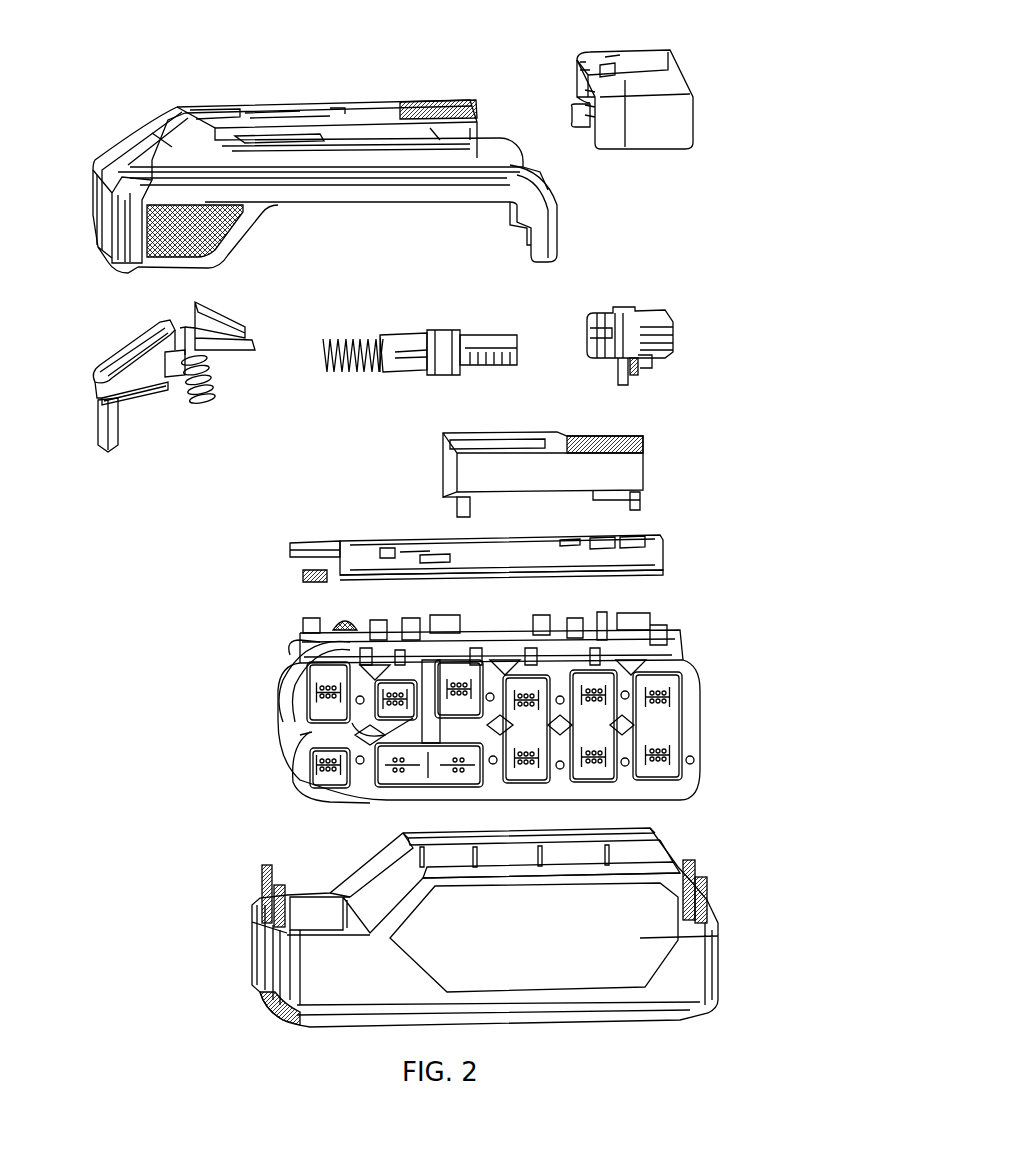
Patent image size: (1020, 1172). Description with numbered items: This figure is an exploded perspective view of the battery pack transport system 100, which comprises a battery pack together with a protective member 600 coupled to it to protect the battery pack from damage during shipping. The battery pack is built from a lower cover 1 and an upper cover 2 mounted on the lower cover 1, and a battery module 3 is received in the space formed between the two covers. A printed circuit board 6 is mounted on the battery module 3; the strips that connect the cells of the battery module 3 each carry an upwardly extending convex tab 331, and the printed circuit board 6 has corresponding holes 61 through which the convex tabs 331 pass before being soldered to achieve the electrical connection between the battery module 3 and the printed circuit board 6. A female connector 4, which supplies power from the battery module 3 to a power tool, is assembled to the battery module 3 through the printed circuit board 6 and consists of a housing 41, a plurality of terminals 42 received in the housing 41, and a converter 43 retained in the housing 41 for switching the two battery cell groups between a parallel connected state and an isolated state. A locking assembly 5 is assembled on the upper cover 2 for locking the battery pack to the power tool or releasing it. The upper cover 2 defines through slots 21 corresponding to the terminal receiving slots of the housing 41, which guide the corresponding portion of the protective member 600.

The battery pack transport system 100 is at (120, 50).
The upper cover 2 is at (312, 120).
The through slots 21 is at (438, 100).
The protective member 600 is at (650, 128).
The locking assembly 5 is at (160, 370).
The converter 43 is at (520, 363).
The terminals 42 is at (642, 357).
The housing 41 is at (593, 477).
The female connector 4 is at (750, 390).
The printed circuit board 6 is at (640, 547).
The holes 61 is at (330, 572).
The battery module 3 is at (305, 710).
The convex tab 331 is at (330, 650).
The lower cover 1 is at (630, 940).